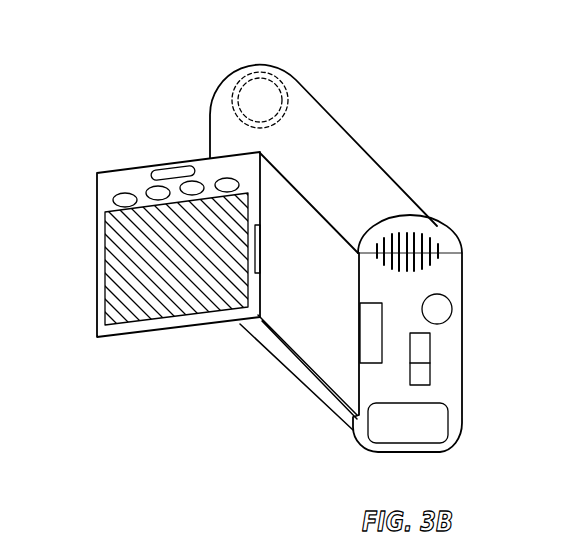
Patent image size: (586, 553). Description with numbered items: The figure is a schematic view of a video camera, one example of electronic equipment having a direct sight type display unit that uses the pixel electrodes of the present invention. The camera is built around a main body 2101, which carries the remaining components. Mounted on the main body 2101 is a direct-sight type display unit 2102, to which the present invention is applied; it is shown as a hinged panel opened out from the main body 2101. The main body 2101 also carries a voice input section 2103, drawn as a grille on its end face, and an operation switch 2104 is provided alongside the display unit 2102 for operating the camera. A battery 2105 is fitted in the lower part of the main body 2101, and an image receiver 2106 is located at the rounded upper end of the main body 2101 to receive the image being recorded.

The main body 2101 is at (338, 133).
The direct-sight type display unit 2102 is at (163, 308).
The voice input section 2103 is at (423, 237).
The operation switch 2104 is at (155, 177).
The battery 2105 is at (388, 432).
The image receiver 2106 is at (247, 75).